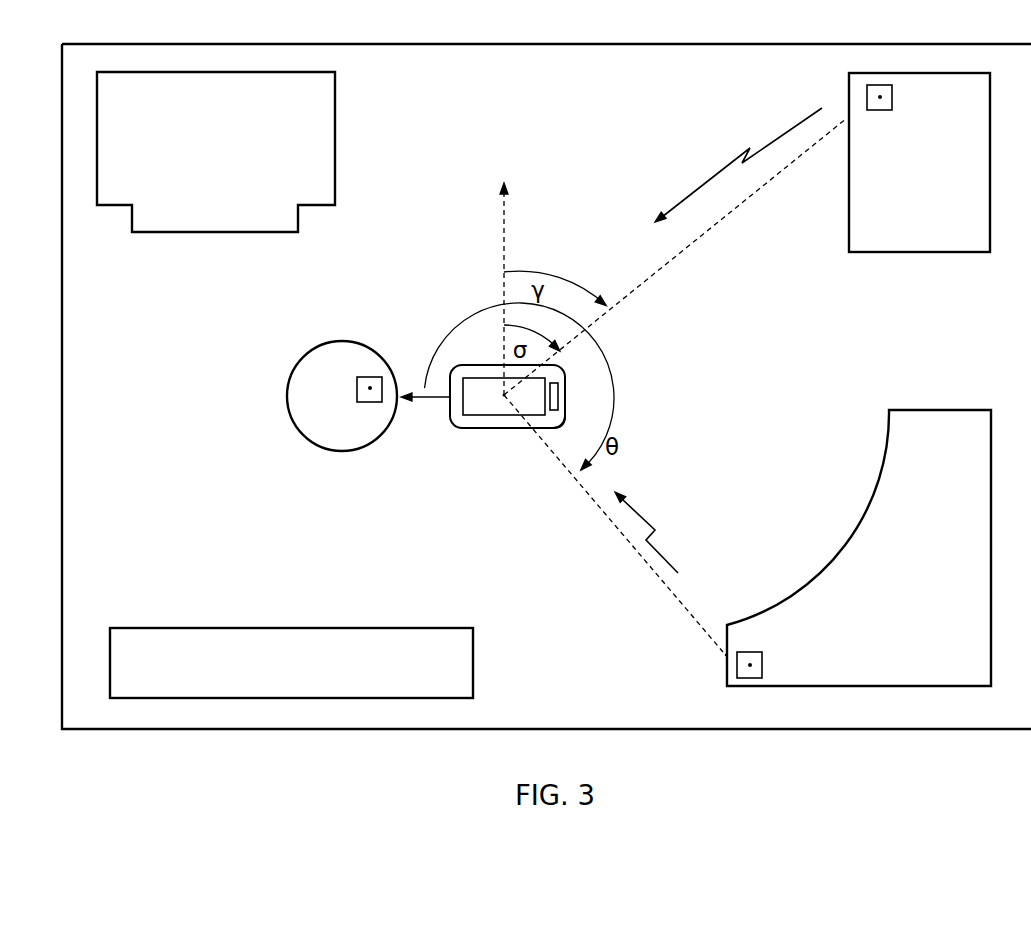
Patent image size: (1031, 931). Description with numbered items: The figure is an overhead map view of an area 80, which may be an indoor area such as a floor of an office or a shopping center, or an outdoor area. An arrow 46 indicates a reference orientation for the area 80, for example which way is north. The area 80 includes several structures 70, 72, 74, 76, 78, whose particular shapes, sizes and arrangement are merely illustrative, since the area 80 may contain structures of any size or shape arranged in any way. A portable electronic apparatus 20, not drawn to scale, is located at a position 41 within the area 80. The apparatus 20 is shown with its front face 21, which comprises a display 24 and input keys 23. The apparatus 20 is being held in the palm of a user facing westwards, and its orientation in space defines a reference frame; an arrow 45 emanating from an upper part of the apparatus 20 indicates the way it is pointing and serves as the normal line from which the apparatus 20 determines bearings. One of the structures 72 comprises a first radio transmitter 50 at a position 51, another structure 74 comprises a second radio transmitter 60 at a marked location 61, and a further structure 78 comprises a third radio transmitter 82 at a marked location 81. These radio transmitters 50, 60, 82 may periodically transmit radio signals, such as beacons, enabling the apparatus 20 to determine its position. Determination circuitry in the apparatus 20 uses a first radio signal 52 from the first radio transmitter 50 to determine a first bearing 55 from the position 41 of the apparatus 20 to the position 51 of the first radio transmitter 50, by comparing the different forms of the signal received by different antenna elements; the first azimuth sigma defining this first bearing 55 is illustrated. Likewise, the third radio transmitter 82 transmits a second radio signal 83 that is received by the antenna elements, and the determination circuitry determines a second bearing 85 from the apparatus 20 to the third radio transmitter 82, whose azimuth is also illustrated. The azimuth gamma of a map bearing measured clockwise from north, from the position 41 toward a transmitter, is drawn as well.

The portable electronic apparatus 20 is at (501, 428).
The front face 21 is at (550, 427).
The input keys 23 is at (570, 399).
The display 24 is at (466, 425).
The position 41 is at (500, 393).
The arrow 45 is at (423, 399).
The arrow 46 is at (500, 225).
The first radio transmitter 50 is at (880, 110).
The position 51 is at (882, 97).
The first radio signal 52 is at (727, 166).
The first bearing 55 is at (738, 207).
The second radio transmitter 60 is at (357, 385).
The location of second access point 61 is at (367, 401).
The structure 70 is at (215, 232).
The structure 72 is at (920, 252).
The structure 74 is at (352, 450).
The structure 76 is at (288, 628).
The structure 78 is at (752, 616).
The area 80 is at (973, 730).
The third wireless access point 81 is at (764, 659).
The third radio transmitter 82 is at (727, 658).
The second radio signal 83 is at (646, 522).
The second bearing 85 is at (634, 547).